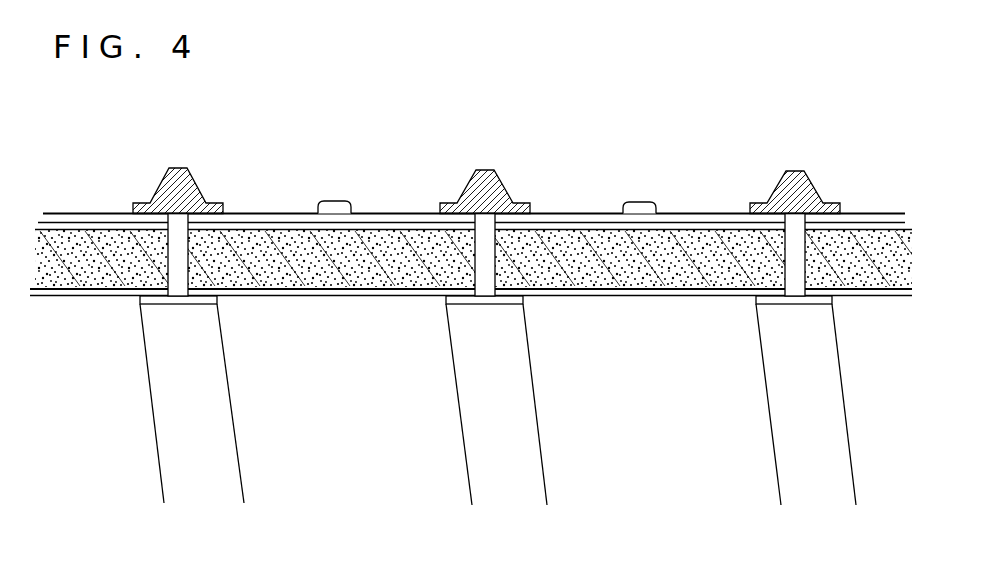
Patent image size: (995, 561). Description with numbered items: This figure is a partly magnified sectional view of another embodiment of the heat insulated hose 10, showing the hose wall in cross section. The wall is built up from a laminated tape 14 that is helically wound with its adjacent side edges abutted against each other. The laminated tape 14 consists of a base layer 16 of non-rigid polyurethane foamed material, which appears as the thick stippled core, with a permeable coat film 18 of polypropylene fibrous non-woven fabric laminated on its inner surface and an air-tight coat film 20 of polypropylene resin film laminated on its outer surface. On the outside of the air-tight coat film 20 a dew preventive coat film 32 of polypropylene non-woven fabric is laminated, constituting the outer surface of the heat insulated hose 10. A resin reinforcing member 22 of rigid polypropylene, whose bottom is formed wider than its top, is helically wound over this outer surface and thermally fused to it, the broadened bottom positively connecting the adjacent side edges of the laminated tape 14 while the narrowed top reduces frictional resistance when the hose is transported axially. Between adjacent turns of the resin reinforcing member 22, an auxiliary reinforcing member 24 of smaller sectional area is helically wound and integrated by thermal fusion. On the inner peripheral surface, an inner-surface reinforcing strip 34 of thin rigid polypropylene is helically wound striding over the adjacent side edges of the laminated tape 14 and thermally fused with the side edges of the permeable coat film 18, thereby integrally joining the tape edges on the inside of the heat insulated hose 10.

The heat insulated hose 10 is at (482, 258).
The laminated tape 14 is at (100, 306).
The base layer 16 is at (273, 294).
The permeable coat film 18 is at (355, 294).
The air-tight coat film 20 is at (388, 211).
The resin reinforcing member 22 is at (500, 183).
The auxiliary reinforcing member 24 is at (643, 208).
The dew preventive coat film 32 is at (273, 212).
The inner-surface reinforcing strip 34 is at (220, 410).